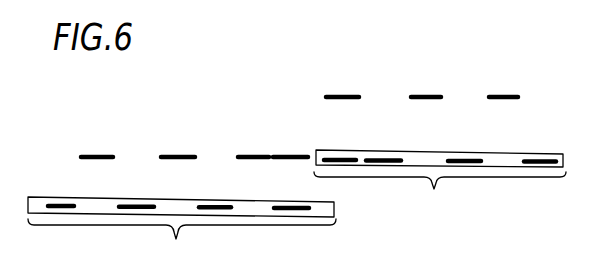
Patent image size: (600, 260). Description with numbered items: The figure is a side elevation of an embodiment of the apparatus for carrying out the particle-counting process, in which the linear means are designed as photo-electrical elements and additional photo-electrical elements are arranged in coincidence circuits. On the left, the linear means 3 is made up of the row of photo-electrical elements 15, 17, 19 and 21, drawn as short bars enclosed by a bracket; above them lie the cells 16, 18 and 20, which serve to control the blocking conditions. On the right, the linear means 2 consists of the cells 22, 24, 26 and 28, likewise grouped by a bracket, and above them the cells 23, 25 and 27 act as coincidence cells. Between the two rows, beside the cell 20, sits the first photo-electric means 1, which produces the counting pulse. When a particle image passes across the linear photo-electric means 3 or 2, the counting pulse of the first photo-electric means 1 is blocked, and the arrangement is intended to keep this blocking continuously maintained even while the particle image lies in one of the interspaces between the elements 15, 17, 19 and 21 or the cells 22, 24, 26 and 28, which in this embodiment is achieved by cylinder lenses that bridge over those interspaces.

The first photo-electric means 1 is at (290, 140).
The linear means 2 is at (440, 169).
The linear means 3 is at (182, 216).
The photo-electrical element 15 is at (61, 189).
The cell 16 is at (97, 140).
The photo-electrical element 17 is at (136, 190).
The cell 18 is at (178, 140).
The photo-electrical element 19 is at (215, 190).
The cell 20 is at (253, 140).
The photo-electrical element 21 is at (291, 190).
The cell 22 is at (340, 142).
The coincidence cell 23 is at (342, 83).
The cell 24 is at (383, 142).
The coincidence cell 25 is at (426, 83).
The cell 26 is at (464, 142).
The coincidence cell 27 is at (503, 83).
The cell 28 is at (540, 143).